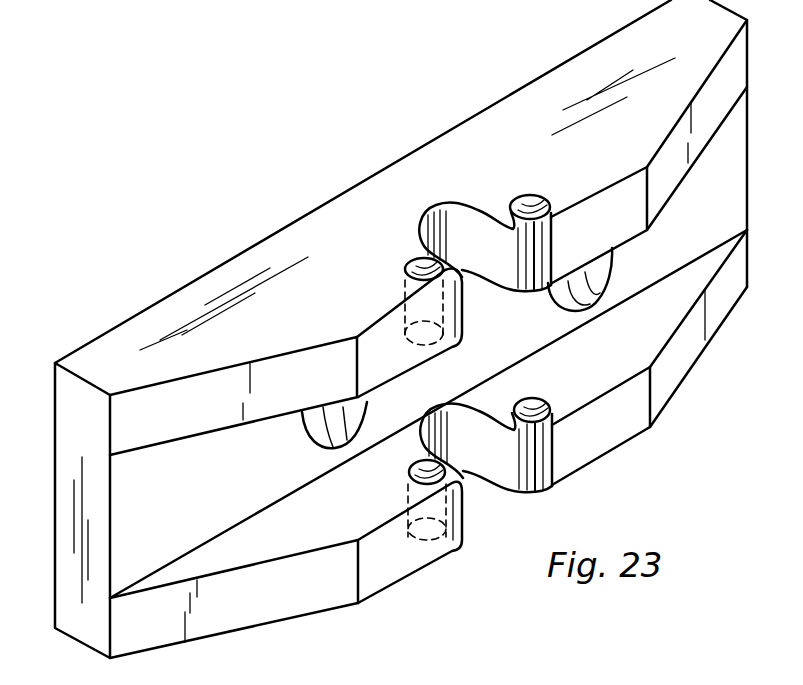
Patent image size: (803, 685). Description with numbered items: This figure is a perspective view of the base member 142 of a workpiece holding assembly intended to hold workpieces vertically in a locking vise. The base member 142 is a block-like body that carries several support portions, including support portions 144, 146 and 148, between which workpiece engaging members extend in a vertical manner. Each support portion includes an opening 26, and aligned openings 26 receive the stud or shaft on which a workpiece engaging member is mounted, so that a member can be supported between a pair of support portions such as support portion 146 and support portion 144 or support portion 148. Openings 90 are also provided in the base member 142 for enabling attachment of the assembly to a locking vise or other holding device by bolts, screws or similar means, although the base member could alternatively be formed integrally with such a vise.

The base member 142 is at (538, 82).
The support portion 144 is at (624, 225).
The support portion 146 is at (390, 307).
The support portion 148 is at (397, 558).
The opening 26 is at (417, 252).
The opening 90 is at (332, 452).